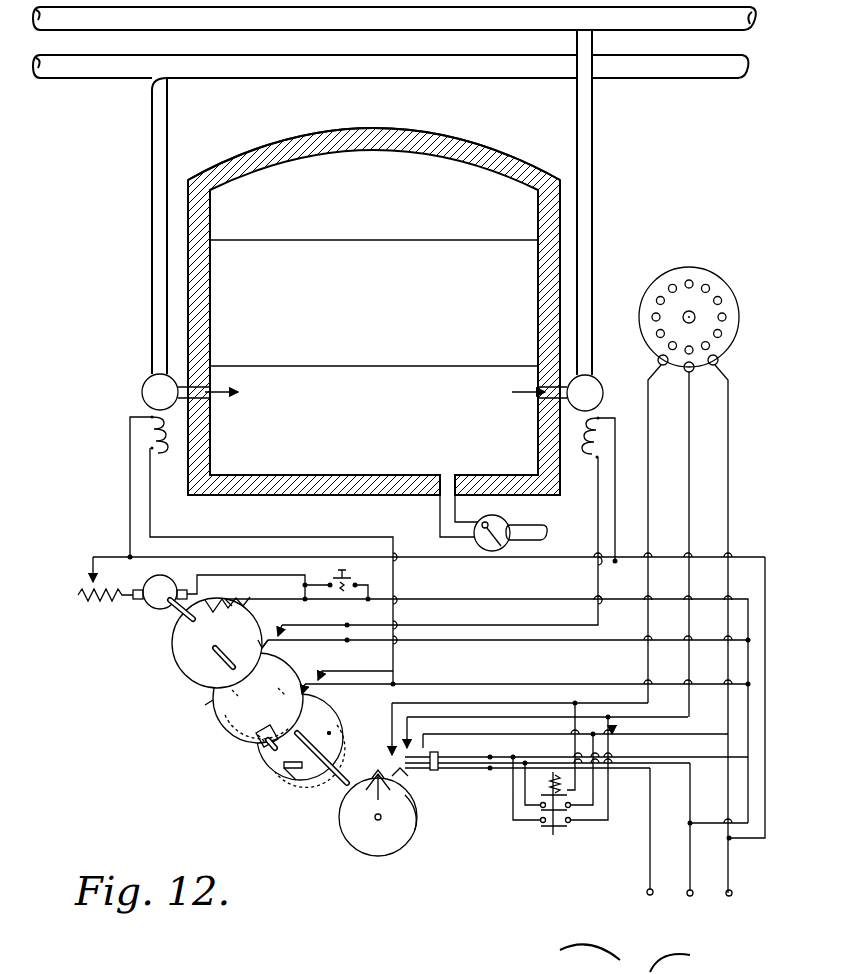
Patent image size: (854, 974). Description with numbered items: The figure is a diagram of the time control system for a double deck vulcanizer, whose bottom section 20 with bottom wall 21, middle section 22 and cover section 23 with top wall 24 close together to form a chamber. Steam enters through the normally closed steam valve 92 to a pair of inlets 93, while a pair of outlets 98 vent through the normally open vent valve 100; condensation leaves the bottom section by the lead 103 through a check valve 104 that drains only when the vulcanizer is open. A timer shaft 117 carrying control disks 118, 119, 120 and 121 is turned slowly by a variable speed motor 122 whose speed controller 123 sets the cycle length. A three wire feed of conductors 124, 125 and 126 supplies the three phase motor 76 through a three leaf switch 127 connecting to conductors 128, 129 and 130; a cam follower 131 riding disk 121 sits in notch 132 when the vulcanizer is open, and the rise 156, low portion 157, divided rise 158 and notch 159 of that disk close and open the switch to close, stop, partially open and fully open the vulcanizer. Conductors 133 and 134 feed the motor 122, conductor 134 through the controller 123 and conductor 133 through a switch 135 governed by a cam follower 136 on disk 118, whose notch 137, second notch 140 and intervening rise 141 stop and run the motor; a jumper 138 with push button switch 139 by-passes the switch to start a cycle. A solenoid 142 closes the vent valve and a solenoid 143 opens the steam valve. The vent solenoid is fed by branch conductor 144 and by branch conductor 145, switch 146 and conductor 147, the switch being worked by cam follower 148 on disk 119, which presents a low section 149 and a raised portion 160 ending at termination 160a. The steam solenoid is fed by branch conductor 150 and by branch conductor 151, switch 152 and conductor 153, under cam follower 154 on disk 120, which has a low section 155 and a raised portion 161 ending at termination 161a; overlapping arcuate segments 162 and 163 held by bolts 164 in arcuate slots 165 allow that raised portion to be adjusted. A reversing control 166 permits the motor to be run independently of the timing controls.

The bottom section 20 is at (210, 436).
The bottom wall 21 is at (348, 475).
The middle section 22 is at (212, 302).
The cover section 23 is at (212, 212).
The top wall 24 is at (225, 166).
The three phase motor 76 is at (702, 268).
The steam valve 92 is at (143, 388).
The inlets 93 is at (168, 380).
The outlets 98 is at (540, 372).
The vent valve 100 is at (600, 390).
The drainage outlet lead 103 is at (438, 527).
The check valve 104 is at (512, 524).
The timer shaft 117 is at (218, 656).
The control disk 118 is at (172, 662).
The control disk 119 is at (218, 708).
The control disk 120 is at (278, 780).
The control disk 121 is at (348, 848).
The variable speed motor 122 is at (150, 607).
The speed controller 123 is at (80, 602).
The feed conductor 124 is at (648, 866).
The feed conductor 125 is at (688, 886).
The feed conductor 126 is at (731, 868).
The three leaf switch 127 is at (505, 770).
The motor conductor 128 is at (400, 728).
The motor conductor 129 is at (443, 702).
The motor conductor 130 is at (505, 740).
The cam follower 131 is at (396, 828).
The notch 132 is at (420, 820).
The conductor 133 is at (748, 750).
The conductor 134 is at (768, 575).
The switch 135 is at (232, 591).
The cam follower 136 is at (250, 602).
The notch 137 is at (243, 640).
The jumper 138 is at (351, 582).
The push button switch 139 is at (345, 557).
The notch 140 is at (178, 620).
The rise 141 is at (200, 625).
The solenoid 142 is at (585, 442).
The solenoid 143 is at (150, 440).
The branch conductor 144 is at (615, 535).
The branch conductor 145 is at (527, 645).
The switch 146 is at (440, 546).
The conductor 147 is at (505, 617).
The cam follower 148 is at (280, 644).
The low section 149 is at (245, 682).
The branch conductor 150 is at (128, 505).
The branch conductor 151 is at (575, 684).
The switch 152 is at (355, 663).
The conductor 153 is at (396, 583).
The cam follower 154 is at (347, 695).
The low section 155 is at (316, 726).
The raised peripheral section 156 is at (410, 774).
The low circumferential portion 157 is at (340, 812).
The divided rise 158 is at (361, 821).
The notch 159 is at (375, 772).
The raised peripheral portion 160 is at (278, 681).
The termination 160a is at (210, 703).
The raised peripheral portion 161 is at (506, 722).
The termination 161a is at (252, 722).
The arcuate segment 162 is at (268, 770).
The arcuate segment 163 is at (330, 772).
The bolts 164 is at (258, 748).
The arcuate slots 165 is at (262, 815).
The reversing control 166 is at (538, 830).